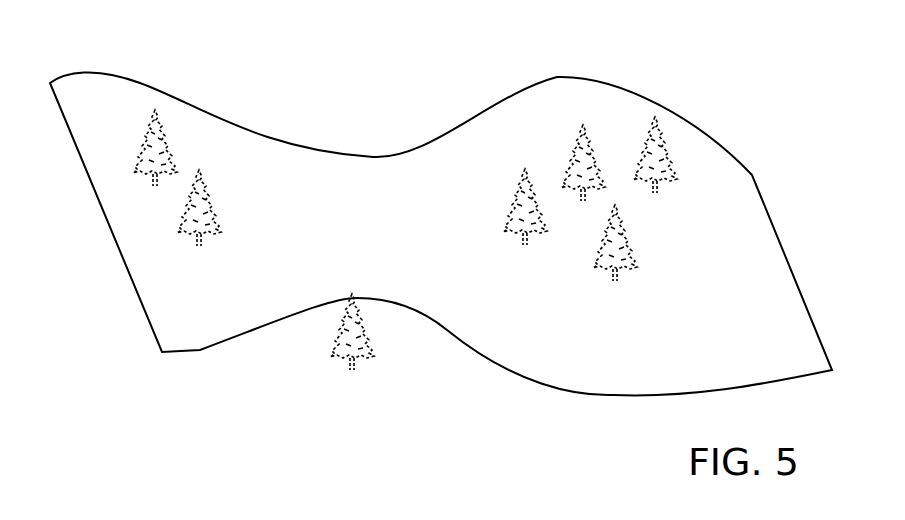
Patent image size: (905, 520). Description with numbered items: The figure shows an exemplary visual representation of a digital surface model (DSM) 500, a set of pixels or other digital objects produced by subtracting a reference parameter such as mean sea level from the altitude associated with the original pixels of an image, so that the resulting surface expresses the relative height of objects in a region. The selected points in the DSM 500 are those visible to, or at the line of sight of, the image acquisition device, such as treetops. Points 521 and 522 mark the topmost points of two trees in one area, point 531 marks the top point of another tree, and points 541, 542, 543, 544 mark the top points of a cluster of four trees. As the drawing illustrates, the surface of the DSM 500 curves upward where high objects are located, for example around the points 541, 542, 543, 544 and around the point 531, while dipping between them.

The digital surface model 500 is at (416, 65).
The point 521 is at (155, 106).
The point 522 is at (199, 166).
The point 531 is at (352, 290).
The point 541 is at (525, 165).
The point 542 is at (617, 203).
The point 543 is at (656, 113).
The point 544 is at (583, 121).